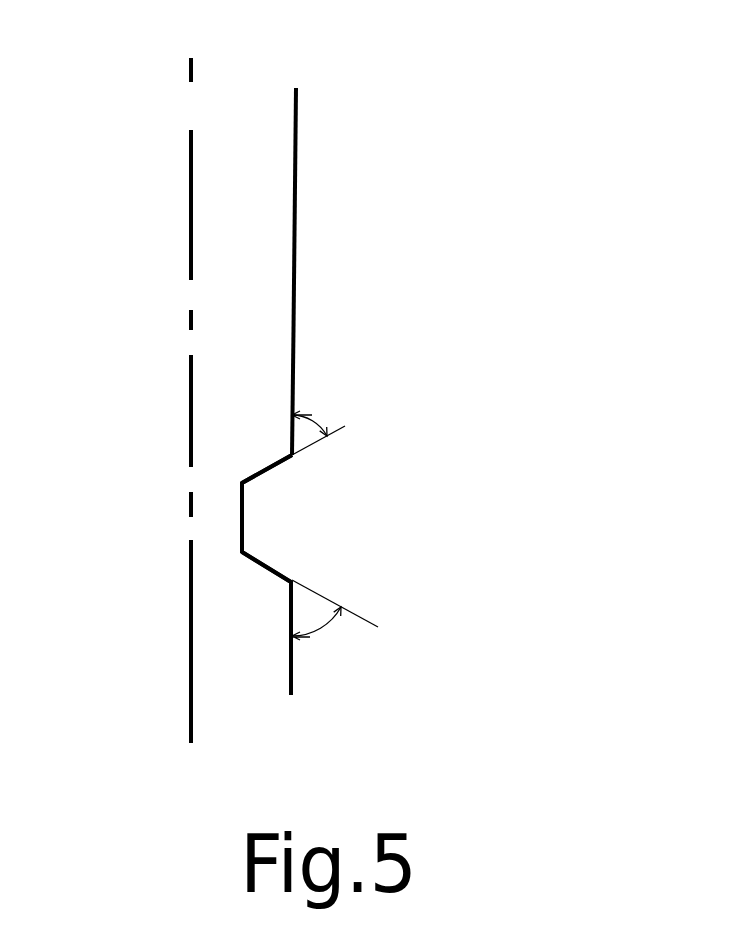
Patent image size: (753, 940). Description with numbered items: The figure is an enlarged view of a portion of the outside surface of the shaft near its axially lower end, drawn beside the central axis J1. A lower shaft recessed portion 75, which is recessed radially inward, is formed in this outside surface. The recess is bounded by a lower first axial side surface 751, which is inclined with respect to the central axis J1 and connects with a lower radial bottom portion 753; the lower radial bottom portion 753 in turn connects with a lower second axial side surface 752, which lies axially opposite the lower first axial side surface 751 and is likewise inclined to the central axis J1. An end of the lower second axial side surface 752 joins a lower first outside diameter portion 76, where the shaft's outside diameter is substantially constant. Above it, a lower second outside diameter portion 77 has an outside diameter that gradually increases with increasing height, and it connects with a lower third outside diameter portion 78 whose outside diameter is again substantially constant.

The central axis J1 is at (190, 75).
The lower third outside diameter portion 78 is at (296, 172).
The lower second outside diameter portion 77 is at (296, 258).
The lower first outside diameter portion 76 is at (293, 392).
The lower shaft recessed portion 75 is at (288, 535).
The lower first axial side surface 751 is at (272, 565).
The lower second axial side surface 752 is at (280, 465).
The lower radial bottom portion 753 is at (242, 512).